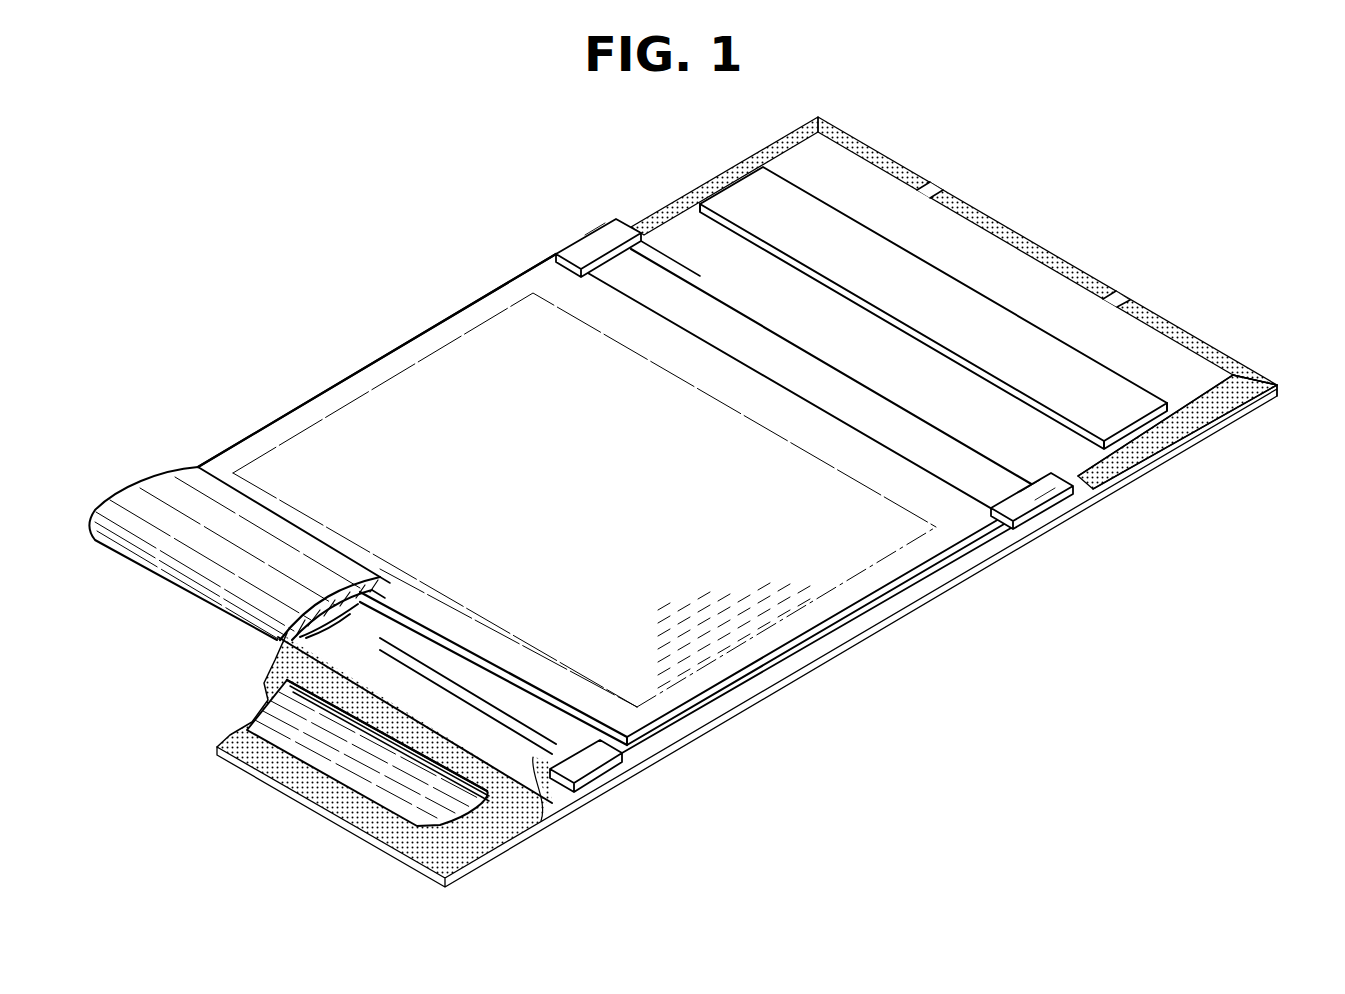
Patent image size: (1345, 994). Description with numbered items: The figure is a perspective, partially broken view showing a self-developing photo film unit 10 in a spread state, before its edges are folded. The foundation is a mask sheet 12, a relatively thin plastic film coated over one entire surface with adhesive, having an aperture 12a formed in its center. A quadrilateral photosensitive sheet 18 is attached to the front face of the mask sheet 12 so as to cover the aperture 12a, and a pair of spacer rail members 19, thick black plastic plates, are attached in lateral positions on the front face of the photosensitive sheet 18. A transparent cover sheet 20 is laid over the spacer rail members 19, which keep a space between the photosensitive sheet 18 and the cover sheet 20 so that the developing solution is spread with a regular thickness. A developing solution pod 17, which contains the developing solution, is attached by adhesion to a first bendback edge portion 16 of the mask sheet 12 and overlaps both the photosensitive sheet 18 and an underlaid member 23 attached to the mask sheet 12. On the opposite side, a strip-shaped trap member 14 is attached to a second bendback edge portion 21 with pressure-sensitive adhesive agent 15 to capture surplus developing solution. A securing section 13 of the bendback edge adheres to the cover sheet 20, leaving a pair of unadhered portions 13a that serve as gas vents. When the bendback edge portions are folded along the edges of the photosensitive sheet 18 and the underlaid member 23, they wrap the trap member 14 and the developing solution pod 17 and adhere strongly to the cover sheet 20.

The self-developing photo film unit 10 is at (318, 372).
The mask sheet 12 is at (342, 856).
The aperture 12a is at (722, 655).
The securing section 13 is at (966, 303).
The unadhered portions 13a is at (936, 188).
The trap member 14 is at (776, 215).
The pressure-sensitive adhesive agent 15 is at (1193, 437).
The first bendback edge portion 16 is at (155, 482).
The developing solution pod 17 is at (306, 612).
The photosensitive sheet 18 is at (665, 292).
The spacer rail members 19 is at (597, 245).
The cover sheet 20 is at (400, 357).
The second bendback edge portion 21 is at (1245, 400).
The underlaid member 23 is at (542, 772).